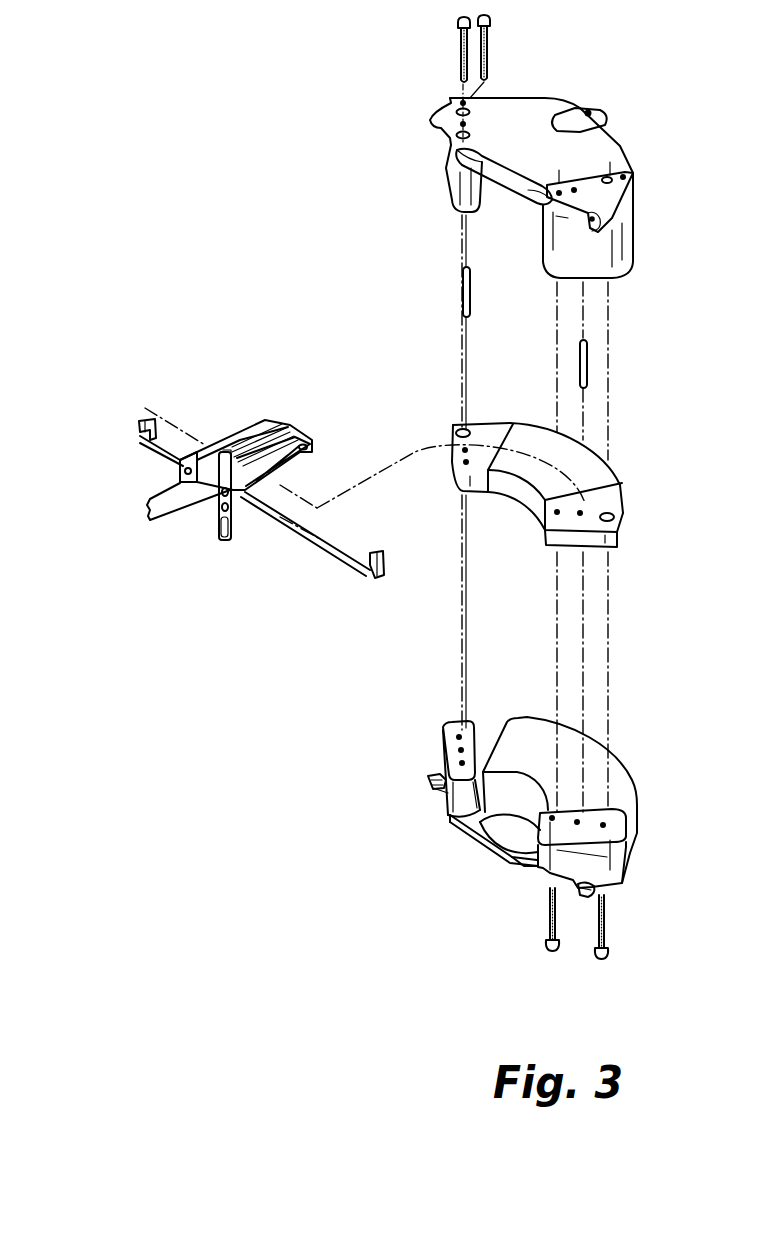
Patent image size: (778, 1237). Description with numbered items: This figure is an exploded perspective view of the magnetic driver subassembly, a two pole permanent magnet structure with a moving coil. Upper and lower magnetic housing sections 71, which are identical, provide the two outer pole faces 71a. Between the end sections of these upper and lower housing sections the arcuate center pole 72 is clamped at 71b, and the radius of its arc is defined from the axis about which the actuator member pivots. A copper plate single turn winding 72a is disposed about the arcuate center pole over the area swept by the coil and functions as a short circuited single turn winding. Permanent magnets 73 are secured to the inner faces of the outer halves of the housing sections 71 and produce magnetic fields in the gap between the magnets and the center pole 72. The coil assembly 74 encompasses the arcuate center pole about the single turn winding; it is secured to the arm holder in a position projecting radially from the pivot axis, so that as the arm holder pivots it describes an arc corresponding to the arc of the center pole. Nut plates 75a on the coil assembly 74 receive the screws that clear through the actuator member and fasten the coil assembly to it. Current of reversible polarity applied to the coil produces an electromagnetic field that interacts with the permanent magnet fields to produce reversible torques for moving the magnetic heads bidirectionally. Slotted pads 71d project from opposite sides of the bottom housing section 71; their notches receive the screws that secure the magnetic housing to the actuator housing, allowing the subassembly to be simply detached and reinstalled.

The magnetic housing section 71 is at (512, 94).
The outer pole face 71a is at (627, 140).
The clamping end section 71b is at (450, 209).
The slotted pad 71d is at (428, 780).
The center pole 72 is at (546, 536).
The copper plate single turn winding 72a is at (522, 506).
The permanent magnet 73 is at (521, 217).
The coil assembly 74 is at (292, 432).
The nut plate 75a is at (135, 418).